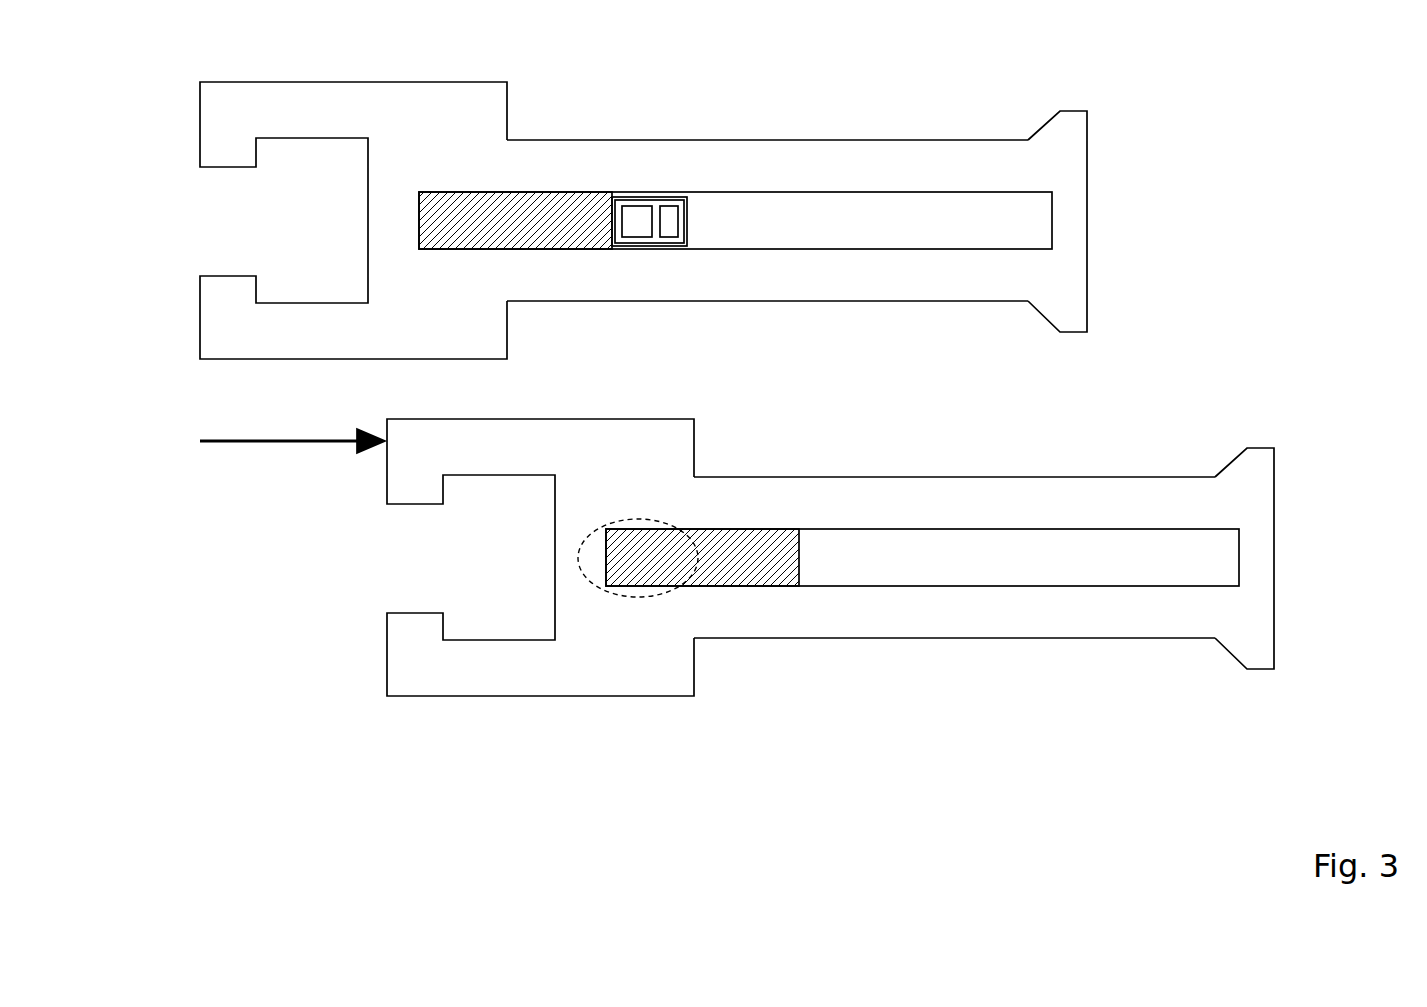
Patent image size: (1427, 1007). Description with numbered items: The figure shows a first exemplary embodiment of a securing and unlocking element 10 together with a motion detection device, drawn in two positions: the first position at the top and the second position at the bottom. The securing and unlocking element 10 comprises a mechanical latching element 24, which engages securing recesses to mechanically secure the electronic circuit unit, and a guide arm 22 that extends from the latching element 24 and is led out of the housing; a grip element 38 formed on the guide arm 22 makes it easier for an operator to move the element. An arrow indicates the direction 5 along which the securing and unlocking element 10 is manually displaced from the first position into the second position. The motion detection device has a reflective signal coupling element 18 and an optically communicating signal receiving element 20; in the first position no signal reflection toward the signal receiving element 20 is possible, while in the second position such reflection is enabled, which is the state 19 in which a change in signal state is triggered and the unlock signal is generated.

The direction 5 is at (272, 441).
The securing and unlocking element 10 is at (560, 165).
The signal coupling element 18 is at (475, 203).
The state 19 is at (658, 593).
The signal receiving element 20 is at (673, 207).
The guide arm 22 is at (911, 162).
The latching element 24 is at (200, 336).
The grip element 38 is at (1087, 152).